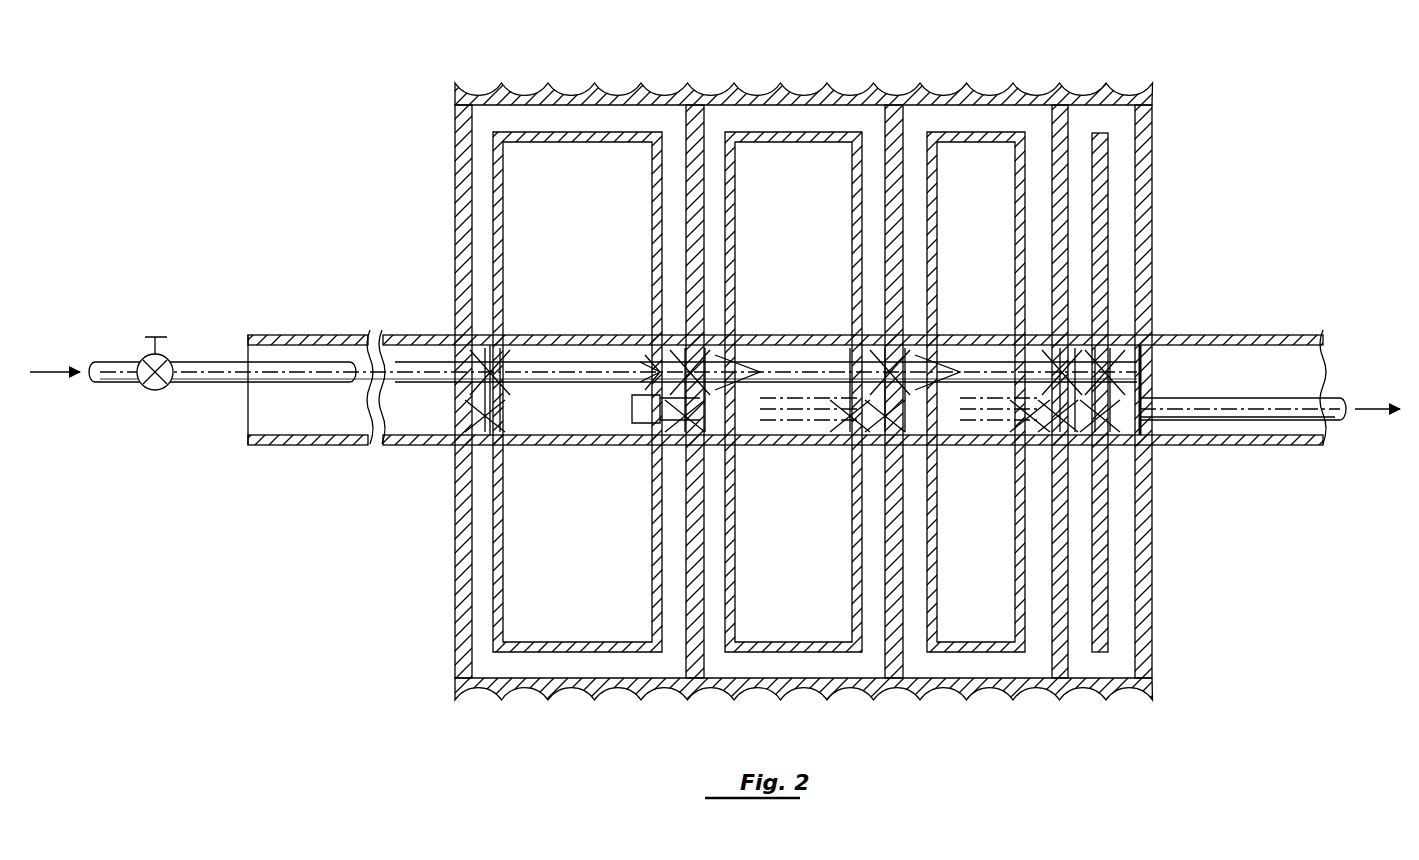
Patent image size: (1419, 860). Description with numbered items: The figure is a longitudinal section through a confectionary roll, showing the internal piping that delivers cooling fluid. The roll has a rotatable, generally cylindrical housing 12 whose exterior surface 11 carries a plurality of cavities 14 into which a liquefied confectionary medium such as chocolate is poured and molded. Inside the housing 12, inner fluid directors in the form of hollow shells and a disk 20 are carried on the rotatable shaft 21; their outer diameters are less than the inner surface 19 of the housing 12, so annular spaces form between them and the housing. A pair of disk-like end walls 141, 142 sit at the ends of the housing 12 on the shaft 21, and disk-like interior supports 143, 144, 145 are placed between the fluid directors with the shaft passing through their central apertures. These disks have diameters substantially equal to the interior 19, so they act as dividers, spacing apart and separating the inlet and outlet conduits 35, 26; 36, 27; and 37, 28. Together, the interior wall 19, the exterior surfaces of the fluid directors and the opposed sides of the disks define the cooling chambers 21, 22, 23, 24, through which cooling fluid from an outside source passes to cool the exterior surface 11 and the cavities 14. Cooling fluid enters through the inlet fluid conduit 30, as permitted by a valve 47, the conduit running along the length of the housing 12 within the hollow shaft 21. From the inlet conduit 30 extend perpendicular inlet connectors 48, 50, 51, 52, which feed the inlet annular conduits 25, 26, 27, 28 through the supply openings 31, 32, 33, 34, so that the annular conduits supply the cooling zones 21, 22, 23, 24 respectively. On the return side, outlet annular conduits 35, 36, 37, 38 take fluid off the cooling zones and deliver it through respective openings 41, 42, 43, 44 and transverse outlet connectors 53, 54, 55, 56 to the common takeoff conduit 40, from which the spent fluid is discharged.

The exterior surface 11 is at (627, 97).
The housing 12 is at (448, 140).
The cavities 14 is at (768, 95).
The inner surface 19 is at (598, 112).
The disk 20 is at (1100, 250).
The shaft 21 is at (545, 120).
The cooling zone 22 is at (828, 122).
The cooling zone 23 is at (972, 122).
The cooling zone 24 is at (1098, 125).
The inlet annular conduit 25 is at (498, 205).
The inlet annular conduit 26 is at (716, 233).
The inlet annular conduit 27 is at (918, 206).
The inlet annular conduit 28 is at (1080, 228).
The supply conduit 30 is at (232, 378).
The supply opening 31 is at (488, 333).
The supply opening 32 is at (715, 336).
The supply opening 33 is at (915, 336).
The supply opening 34 is at (1152, 325).
The outlet annular conduit 35 is at (675, 264).
The outlet annular conduit 36 is at (875, 255).
The outlet annular conduit 37 is at (1030, 285).
The outlet annular conduit 38 is at (1122, 277).
The takeoff conduit 40 is at (1330, 420).
The outlet opening 41 is at (655, 455).
The outlet opening 42 is at (884, 452).
The outlet opening 43 is at (1052, 460).
The outlet opening 44 is at (1150, 472).
The valve 47 is at (165, 345).
The inlet connector 48 is at (468, 412).
The inlet connector 50 is at (760, 448).
The inlet connector 51 is at (948, 447).
The inlet connector 52 is at (1143, 364).
The outlet connector 53 is at (655, 388).
The outlet connector 54 is at (868, 445).
The outlet connector 55 is at (1040, 447).
The outlet connector 56 is at (1185, 447).
The end wall 141 is at (462, 214).
The end wall 142 is at (1142, 155).
The interior support 143 is at (696, 170).
The interior support 144 is at (896, 185).
The interior support 145 is at (1060, 182).